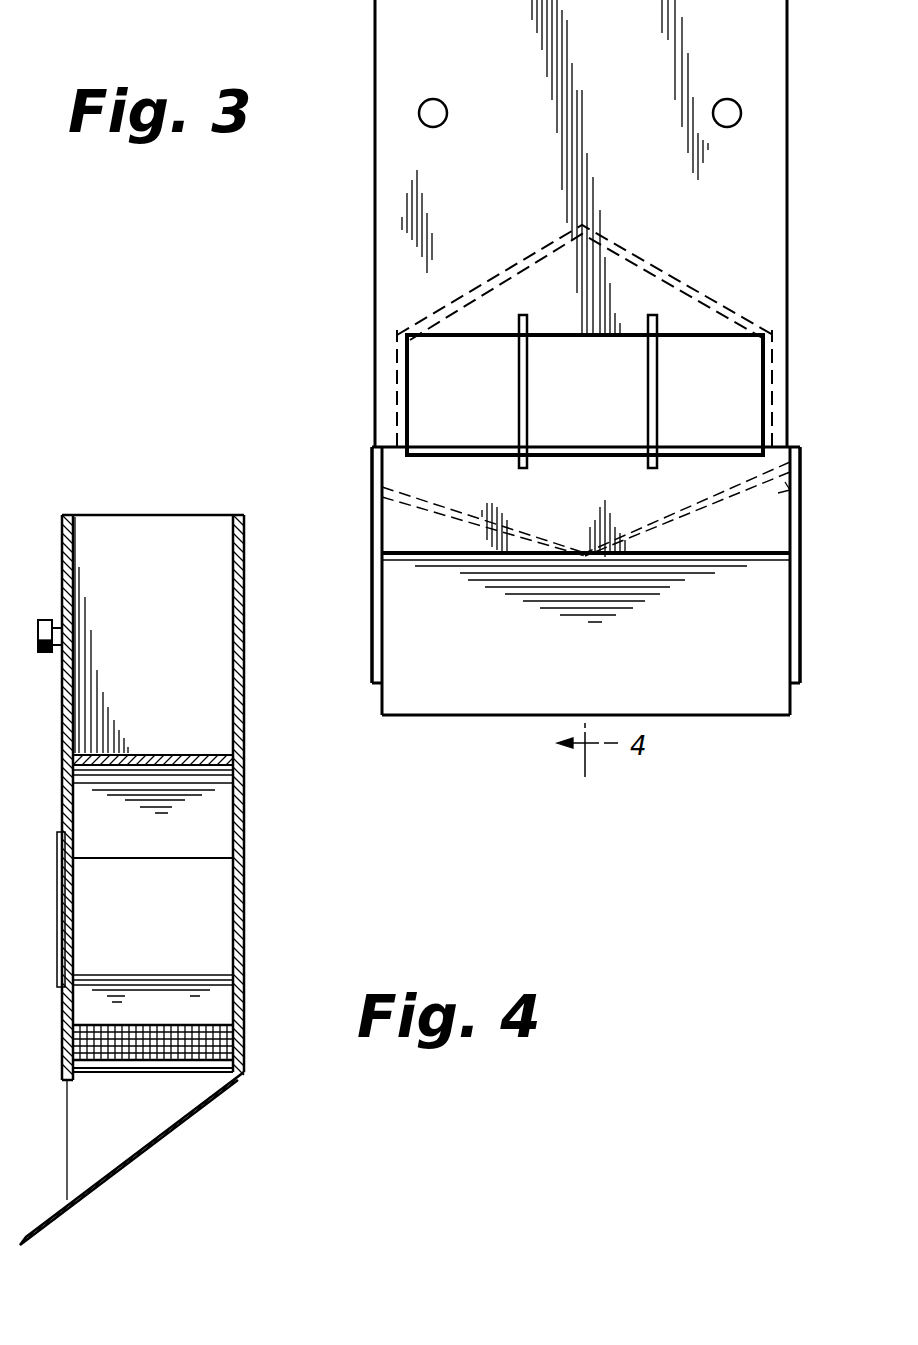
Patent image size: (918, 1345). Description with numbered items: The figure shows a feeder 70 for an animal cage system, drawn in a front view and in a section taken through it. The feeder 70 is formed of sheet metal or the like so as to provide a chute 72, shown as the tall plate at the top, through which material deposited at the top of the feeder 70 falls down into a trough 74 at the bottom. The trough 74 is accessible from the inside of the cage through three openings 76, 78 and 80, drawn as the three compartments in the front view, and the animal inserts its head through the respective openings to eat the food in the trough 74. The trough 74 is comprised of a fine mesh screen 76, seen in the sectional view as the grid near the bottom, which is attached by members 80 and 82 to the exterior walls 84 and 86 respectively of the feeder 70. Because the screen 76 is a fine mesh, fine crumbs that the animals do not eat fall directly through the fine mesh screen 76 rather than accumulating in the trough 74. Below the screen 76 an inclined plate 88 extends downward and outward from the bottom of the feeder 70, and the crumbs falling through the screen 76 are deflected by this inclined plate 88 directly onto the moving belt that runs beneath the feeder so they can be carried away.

In FIG. 3, the feeder 70 is at (368, 300).
In FIG. 4, the feeder 70 is at (252, 861).
In FIG. 3, the chute 72 is at (535, 187).
In FIG. 3, the trough 74 is at (595, 507).
In FIG. 4, the trough 74 is at (175, 1021).
In FIG. 3, the fine mesh screen 76 is at (480, 410).
In FIG. 4, the fine mesh screen 76 is at (244, 1045).
In FIG. 3, the opening 78 is at (605, 410).
In FIG. 3, the member 80 is at (732, 410).
In FIG. 4, the member 80 is at (225, 1004).
In FIG. 3, the member 82 is at (800, 497).
In FIG. 3, the exterior wall 84 is at (372, 528).
In FIG. 3, the exterior wall 86 is at (793, 538).
In FIG. 4, the inclined plate 88 is at (165, 1135).